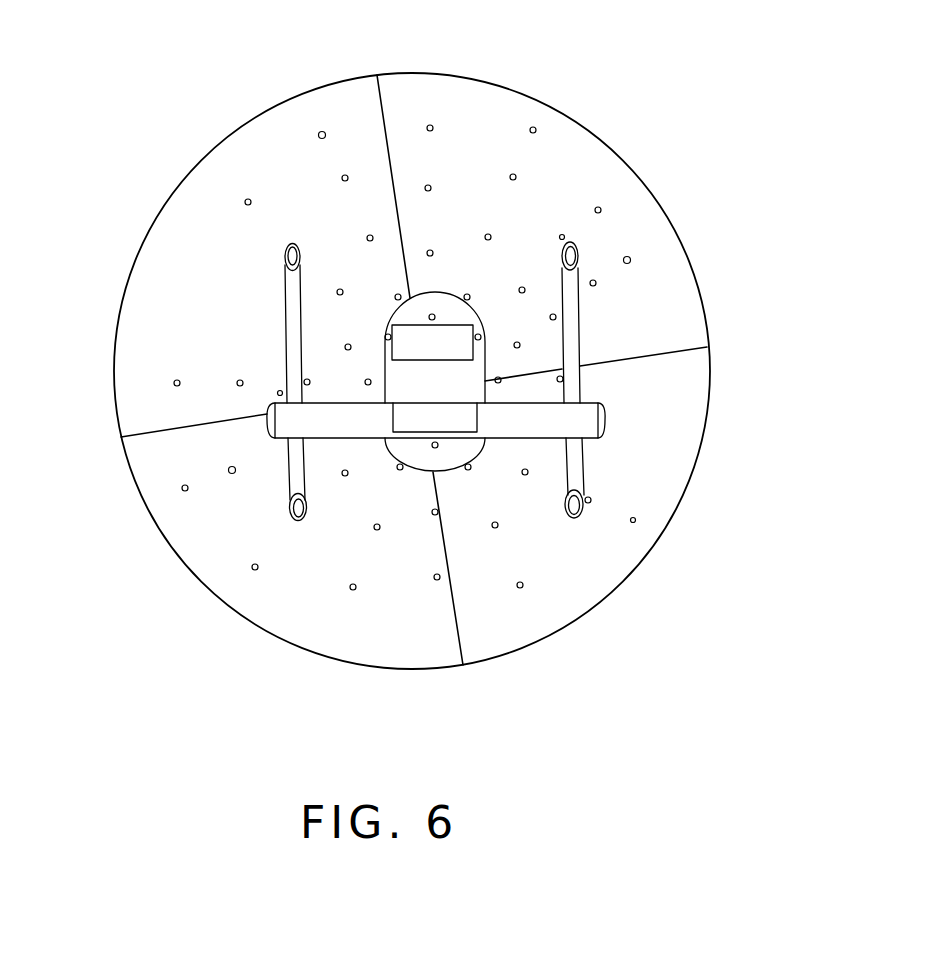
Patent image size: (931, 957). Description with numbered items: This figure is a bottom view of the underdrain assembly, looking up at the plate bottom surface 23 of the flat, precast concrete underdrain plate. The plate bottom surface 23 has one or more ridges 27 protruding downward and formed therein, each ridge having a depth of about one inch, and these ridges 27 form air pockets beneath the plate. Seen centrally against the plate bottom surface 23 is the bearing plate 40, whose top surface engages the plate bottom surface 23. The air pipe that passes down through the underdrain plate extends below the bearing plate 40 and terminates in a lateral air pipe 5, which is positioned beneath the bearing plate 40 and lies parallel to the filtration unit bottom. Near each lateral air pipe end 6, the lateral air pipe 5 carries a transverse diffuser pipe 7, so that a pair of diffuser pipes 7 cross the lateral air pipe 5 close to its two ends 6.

The plate bottom surface 23 is at (657, 265).
The ridges 27 is at (387, 125).
The transverse diffuser pipe 7 is at (285, 322).
The lateral air pipe end 6 is at (266, 414).
The lateral air pipe 5 is at (503, 438).
The bearing plate 40 is at (427, 293).